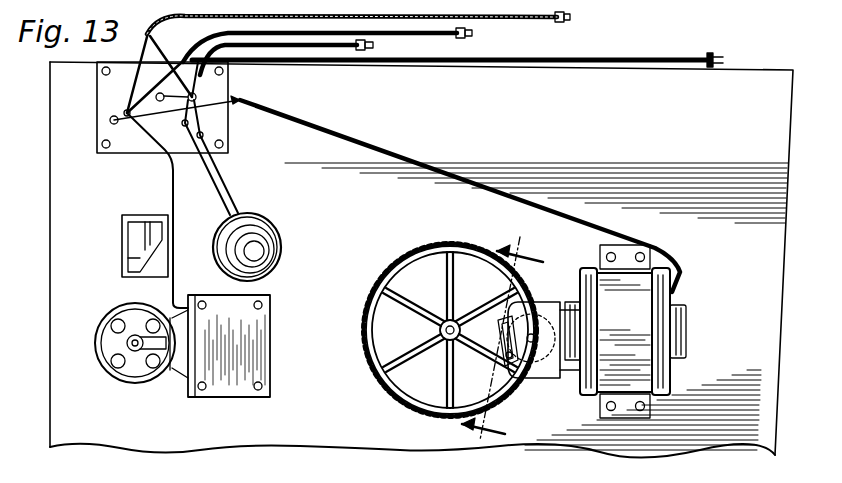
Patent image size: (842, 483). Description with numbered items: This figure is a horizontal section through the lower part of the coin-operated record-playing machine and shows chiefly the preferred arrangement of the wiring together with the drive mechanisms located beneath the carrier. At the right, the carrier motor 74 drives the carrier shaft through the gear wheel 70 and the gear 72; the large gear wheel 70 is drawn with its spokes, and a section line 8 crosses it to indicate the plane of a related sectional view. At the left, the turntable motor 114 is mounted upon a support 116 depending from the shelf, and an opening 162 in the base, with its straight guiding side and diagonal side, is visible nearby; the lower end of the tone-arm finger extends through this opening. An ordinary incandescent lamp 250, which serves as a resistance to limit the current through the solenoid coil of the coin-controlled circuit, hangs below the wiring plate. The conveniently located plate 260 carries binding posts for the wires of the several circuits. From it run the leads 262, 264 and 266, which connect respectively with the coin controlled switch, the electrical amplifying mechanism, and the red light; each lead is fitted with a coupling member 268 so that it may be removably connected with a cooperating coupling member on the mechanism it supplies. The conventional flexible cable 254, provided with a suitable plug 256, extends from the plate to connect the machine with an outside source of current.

The section line 8— 8 is at (510, 342).
The gear wheel 70 is at (430, 245).
The gear 72 is at (537, 380).
The carrier motor 74 is at (688, 320).
The turntable motor 114 is at (125, 380).
The support 116 is at (236, 390).
The opening 162 is at (128, 243).
The incandescent lamp 250 is at (278, 249).
The flexible cable 254 is at (612, 64).
The plug 256 is at (716, 68).
The plate 260 is at (128, 150).
The lead 262 is at (309, 50).
The lead 264 is at (425, 38).
The lead 266 is at (478, 22).
The coupling members 268 is at (564, 24).